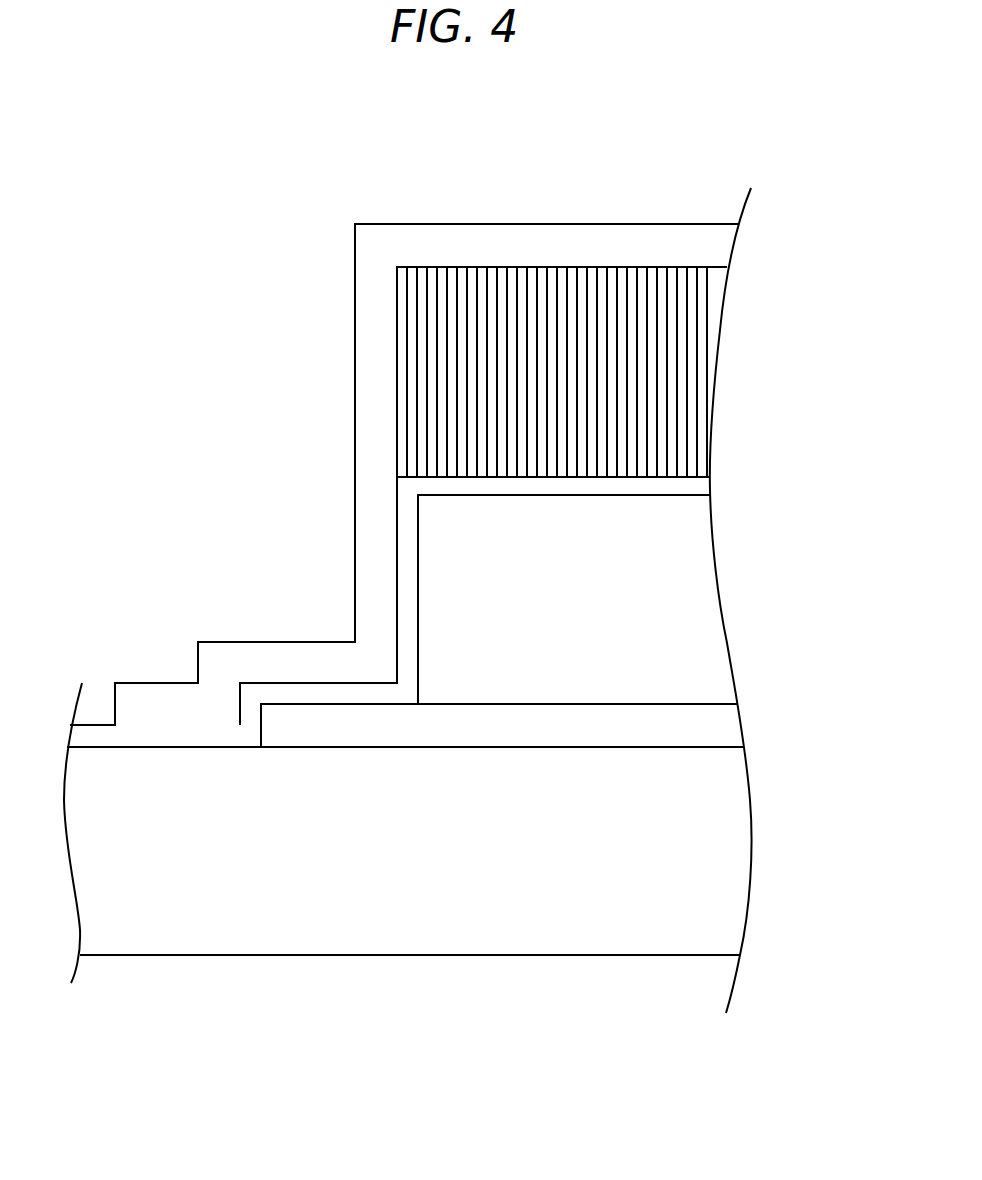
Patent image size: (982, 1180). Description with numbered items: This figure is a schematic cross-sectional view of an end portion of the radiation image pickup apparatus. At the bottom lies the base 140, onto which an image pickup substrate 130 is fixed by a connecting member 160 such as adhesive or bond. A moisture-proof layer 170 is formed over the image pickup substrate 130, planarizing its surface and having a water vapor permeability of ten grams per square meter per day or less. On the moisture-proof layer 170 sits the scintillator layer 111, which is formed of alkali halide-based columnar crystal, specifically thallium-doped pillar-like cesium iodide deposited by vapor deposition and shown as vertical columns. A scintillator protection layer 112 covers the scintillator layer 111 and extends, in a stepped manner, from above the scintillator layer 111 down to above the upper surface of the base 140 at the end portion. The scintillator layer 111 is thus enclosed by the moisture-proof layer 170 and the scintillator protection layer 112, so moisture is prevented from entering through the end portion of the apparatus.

The scintillator protection layer 112 is at (582, 224).
The scintillator layer 111 is at (403, 371).
The moisture-proof layer 170 is at (697, 489).
The image pickup substrate 130 is at (688, 643).
The connecting member 160 is at (705, 728).
The base 140 is at (705, 862).